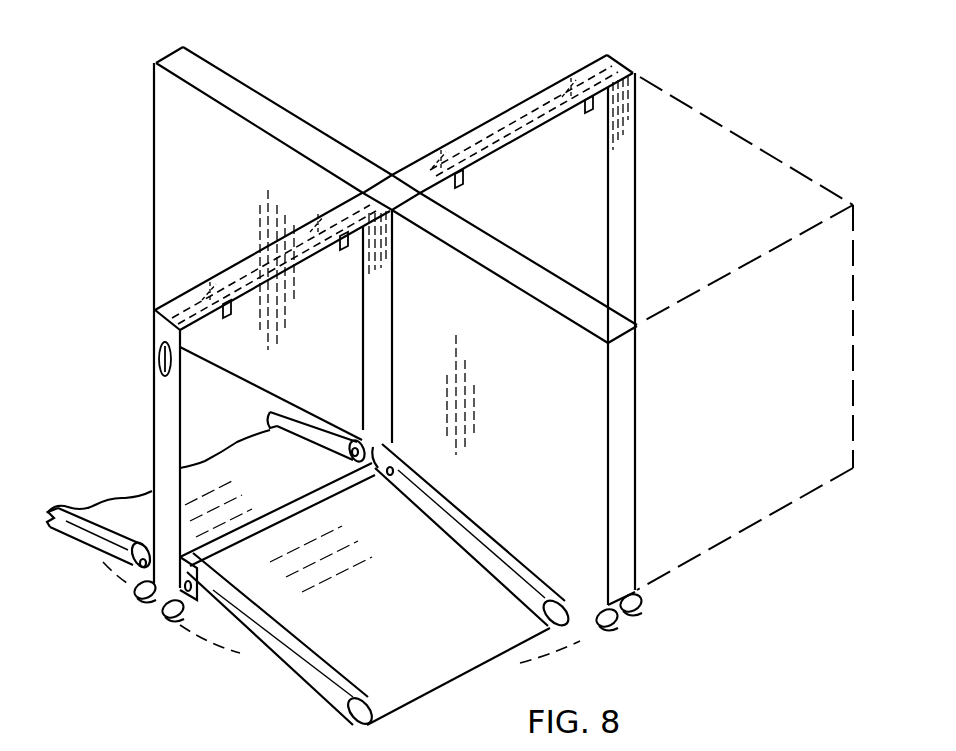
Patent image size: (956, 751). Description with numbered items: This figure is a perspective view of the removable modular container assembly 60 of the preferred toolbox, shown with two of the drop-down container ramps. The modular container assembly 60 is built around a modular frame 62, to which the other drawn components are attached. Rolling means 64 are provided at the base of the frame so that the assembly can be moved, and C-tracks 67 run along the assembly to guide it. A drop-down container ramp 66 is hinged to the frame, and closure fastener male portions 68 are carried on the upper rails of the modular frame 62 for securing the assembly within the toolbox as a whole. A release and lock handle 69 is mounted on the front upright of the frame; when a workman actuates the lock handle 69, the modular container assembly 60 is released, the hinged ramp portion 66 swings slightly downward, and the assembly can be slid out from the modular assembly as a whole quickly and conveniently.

The modular container assembly 60 is at (757, 130).
The modular frame 62 is at (250, 102).
The rolling means 64 is at (172, 618).
The drop-down container ramp 66 is at (122, 514).
The C-track 67 is at (82, 532).
The closure fastener male portions 68 is at (588, 113).
The release and lock handle 69 is at (157, 358).